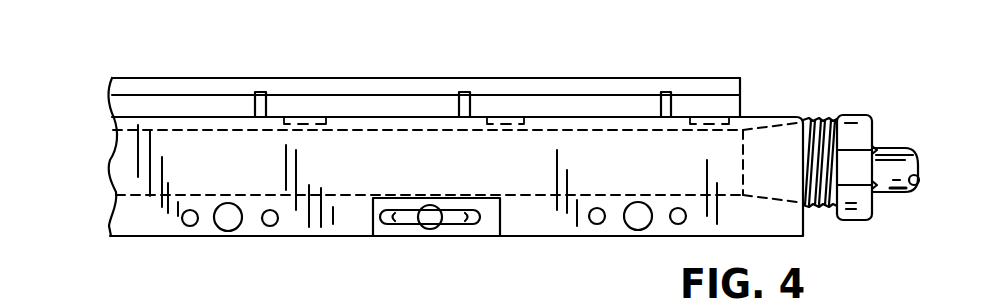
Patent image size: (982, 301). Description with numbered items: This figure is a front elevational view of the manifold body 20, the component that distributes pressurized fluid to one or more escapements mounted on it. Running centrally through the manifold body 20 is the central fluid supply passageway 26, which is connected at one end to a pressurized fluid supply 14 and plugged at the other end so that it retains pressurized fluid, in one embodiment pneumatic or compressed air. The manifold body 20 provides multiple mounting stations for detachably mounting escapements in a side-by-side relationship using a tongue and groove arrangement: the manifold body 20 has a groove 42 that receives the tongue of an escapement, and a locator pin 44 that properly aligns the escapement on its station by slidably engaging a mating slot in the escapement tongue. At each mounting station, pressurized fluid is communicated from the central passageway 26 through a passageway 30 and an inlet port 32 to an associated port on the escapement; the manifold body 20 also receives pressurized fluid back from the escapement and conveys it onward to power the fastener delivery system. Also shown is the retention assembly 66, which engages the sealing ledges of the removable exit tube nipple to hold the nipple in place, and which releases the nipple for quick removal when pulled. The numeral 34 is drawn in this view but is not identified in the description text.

The pressurized fluid supply 14 is at (898, 147).
The manifold body 20 is at (147, 240).
The central fluid supply passageway 26 is at (112, 182).
The passageway 30 is at (283, 295).
The inlet port 32 is at (499, 132).
The conductor 34 is at (392, 295).
The groove 42 is at (744, 100).
The locator pin 44 is at (670, 92).
The retention assembly 66 is at (500, 218).